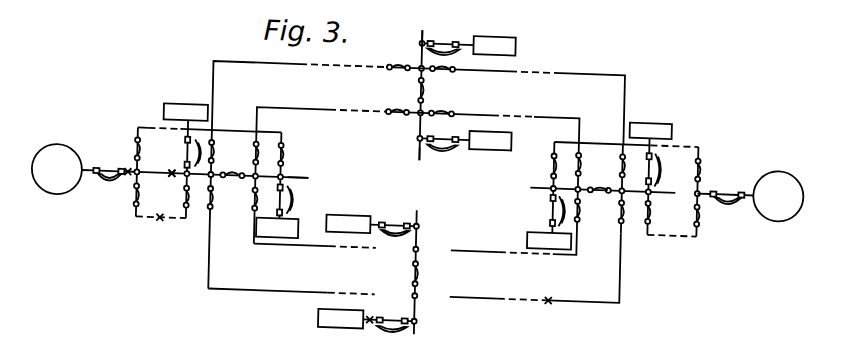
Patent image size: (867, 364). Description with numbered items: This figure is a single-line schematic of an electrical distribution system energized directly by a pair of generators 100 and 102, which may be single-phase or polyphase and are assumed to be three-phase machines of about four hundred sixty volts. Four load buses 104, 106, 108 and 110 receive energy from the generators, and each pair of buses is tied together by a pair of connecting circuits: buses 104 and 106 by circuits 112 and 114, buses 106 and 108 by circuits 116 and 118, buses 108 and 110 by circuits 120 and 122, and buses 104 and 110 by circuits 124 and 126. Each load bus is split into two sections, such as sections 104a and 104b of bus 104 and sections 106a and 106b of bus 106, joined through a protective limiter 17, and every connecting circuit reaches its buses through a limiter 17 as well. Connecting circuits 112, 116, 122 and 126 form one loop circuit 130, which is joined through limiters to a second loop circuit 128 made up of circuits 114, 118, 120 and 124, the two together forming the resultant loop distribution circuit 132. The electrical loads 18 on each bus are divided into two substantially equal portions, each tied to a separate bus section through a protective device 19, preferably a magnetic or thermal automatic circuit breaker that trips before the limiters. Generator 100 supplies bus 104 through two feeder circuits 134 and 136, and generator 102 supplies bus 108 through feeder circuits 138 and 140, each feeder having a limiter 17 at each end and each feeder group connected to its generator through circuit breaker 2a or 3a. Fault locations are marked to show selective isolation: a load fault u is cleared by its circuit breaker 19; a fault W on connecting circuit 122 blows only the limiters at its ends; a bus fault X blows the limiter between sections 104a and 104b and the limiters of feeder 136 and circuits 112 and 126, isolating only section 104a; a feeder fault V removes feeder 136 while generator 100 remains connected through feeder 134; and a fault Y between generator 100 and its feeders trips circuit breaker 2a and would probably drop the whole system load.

The generator 100 is at (64, 150).
The generator 102 is at (787, 150).
The circuit breaker 2a is at (110, 183).
The circuit breaker 3a is at (733, 183).
The load bus 104 is at (313, 174).
The load bus section 104a is at (171, 171).
The load bus section 104b is at (311, 176).
The load bus 106 is at (424, 154).
The load bus section 106a is at (420, 28).
The load bus section 106b is at (420, 151).
The load bus 108 is at (533, 176).
The load bus 110 is at (421, 206).
The connecting circuit 112 is at (262, 61).
The connecting circuit 114 is at (305, 105).
The connecting circuit 116 is at (574, 60).
The connecting circuit 118 is at (556, 105).
The connecting circuit 120 is at (502, 245).
The connecting circuit 122 is at (513, 290).
The connecting circuit 124 is at (331, 248).
The connecting circuit 126 is at (313, 285).
The second loop circuit 128 is at (580, 243).
The loop circuit 130 is at (622, 289).
The resultant loop distribution circuit 132 is at (480, 224).
The feeder circuit 134 is at (148, 129).
The feeder circuit 136 is at (183, 221).
The feeder circuit 138 is at (692, 127).
The feeder circuit 140 is at (679, 220).
The limiter 17 is at (400, 59).
The electrical load 18 is at (504, 27).
The protective device 19 is at (443, 39).
The fault X is at (172, 177).
The fault Y is at (129, 180).
The fault V is at (161, 224).
The fault W is at (557, 292).
The fault u is at (376, 318).